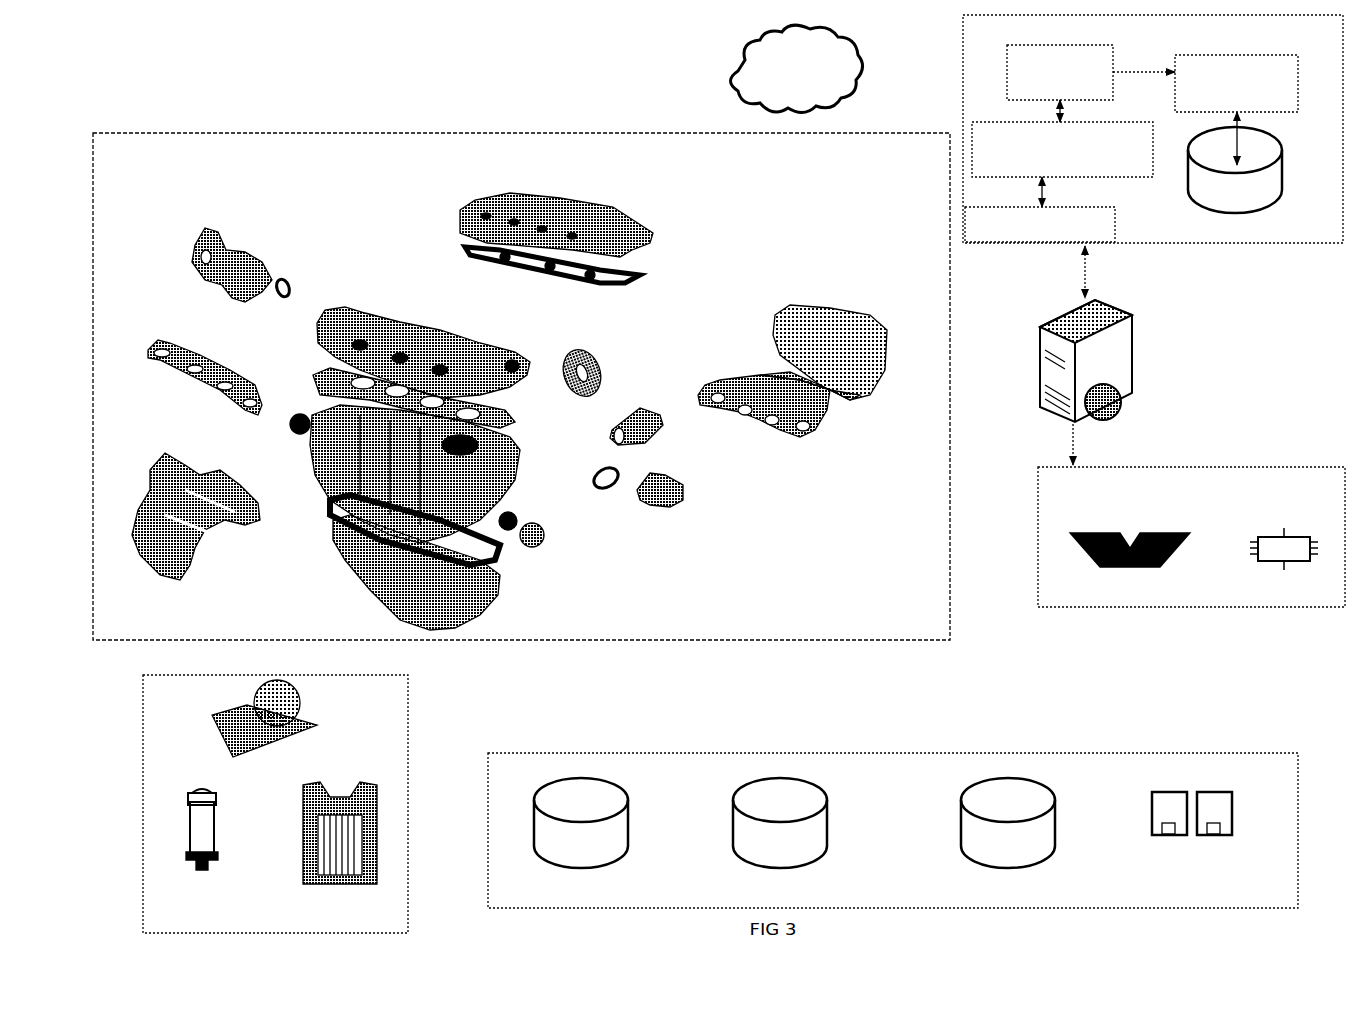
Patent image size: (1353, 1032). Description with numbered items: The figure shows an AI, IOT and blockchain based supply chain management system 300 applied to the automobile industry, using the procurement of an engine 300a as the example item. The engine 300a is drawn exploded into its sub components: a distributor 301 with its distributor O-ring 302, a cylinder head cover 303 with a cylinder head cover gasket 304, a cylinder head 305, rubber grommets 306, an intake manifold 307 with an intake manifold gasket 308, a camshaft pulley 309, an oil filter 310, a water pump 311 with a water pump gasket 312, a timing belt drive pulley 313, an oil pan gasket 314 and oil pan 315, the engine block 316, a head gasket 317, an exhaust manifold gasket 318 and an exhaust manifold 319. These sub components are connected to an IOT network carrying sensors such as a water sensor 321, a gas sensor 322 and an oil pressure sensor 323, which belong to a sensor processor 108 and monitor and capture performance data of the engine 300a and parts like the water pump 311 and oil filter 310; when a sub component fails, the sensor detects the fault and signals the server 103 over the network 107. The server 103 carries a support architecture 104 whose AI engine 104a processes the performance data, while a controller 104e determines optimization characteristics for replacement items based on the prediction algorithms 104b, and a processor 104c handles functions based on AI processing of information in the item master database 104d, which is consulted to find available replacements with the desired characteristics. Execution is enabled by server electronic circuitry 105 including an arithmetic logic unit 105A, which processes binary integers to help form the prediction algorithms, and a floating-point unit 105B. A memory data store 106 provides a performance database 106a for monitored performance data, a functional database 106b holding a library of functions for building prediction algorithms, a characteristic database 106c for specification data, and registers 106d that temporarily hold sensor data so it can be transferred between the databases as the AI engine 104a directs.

The supply chain management system 300 is at (719, 474).
The engine 300a is at (430, 131).
The distributor 301 is at (229, 255).
The distributor O-ring 302 is at (293, 281).
The cylinder head cover 303 is at (540, 225).
The cylinder head cover gasket 304 is at (571, 265).
The cylinder head 305 is at (423, 350).
The rubber grommets 306 is at (560, 271).
The intake manifold 307 is at (823, 352).
The intake manifold gasket 308 is at (764, 410).
The camshaft pulley 309 is at (582, 365).
The oil filter 310 is at (637, 414).
The water pump 311 is at (669, 482).
The water pump gasket 312 is at (591, 478).
The timing belt drive pulley 313 is at (550, 535).
The oil pan gasket 314 is at (428, 530).
The oil pan 315 is at (416, 572).
The engine block 316 is at (399, 474).
The head gasket 317 is at (401, 398).
The exhaust manifold gasket 318 is at (196, 516).
The exhaust manifold 319 is at (198, 377).
The water sensor 321 is at (218, 829).
The gas sensor 322 is at (346, 833).
The oil pressure sensor 323 is at (273, 718).
The server 103 is at (1086, 355).
The support architecture 104 is at (1154, 129).
The AI engine 104a is at (1060, 72).
The prediction algorithms 104b is at (1062, 149).
The processor 104c is at (1236, 83).
The item master database 104d is at (1235, 184).
The controller 104e is at (1040, 224).
The electronic circuitry 105 is at (1191, 537).
The arithmetic logic unit 105A is at (1130, 567).
The floating-point unit 105B is at (1284, 564).
The memory data store 106 is at (893, 830).
The performance database 106a is at (582, 835).
The functional database 106b is at (781, 835).
The characteristic database 106c is at (1009, 836).
The registers 106d is at (1192, 839).
The network 107 is at (797, 68).
The sensor processor 108 is at (275, 804).